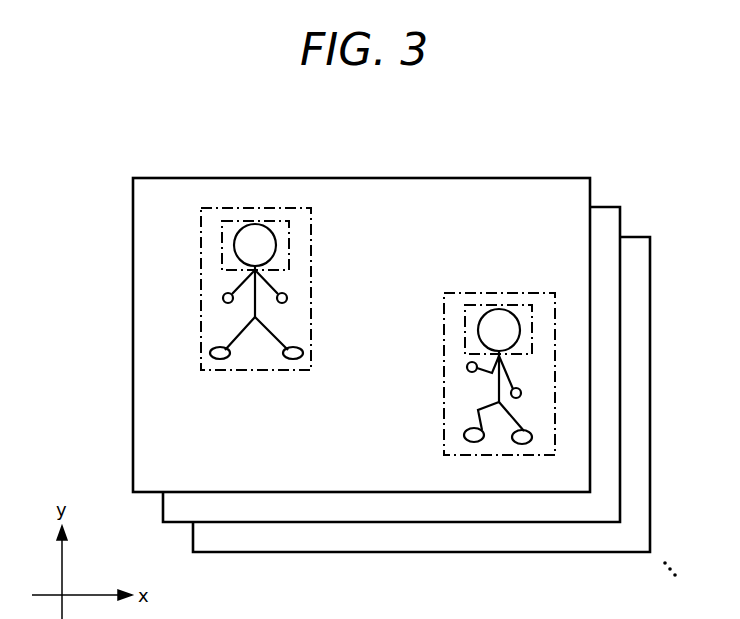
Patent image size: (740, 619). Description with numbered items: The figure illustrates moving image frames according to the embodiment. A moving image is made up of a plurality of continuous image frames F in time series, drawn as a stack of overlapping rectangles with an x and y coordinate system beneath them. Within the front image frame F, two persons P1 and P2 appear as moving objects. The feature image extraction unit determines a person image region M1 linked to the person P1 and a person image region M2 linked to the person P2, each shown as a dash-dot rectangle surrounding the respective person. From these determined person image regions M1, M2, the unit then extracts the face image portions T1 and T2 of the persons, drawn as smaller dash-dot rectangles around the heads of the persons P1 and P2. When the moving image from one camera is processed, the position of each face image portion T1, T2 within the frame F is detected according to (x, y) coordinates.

The image frame F is at (630, 186).
The face image portion T1 is at (289, 242).
The person image region M1 is at (312, 288).
The person P1 is at (281, 340).
The face image portion T2 is at (458, 333).
The person image region M2 is at (444, 378).
The person P2 is at (483, 423).